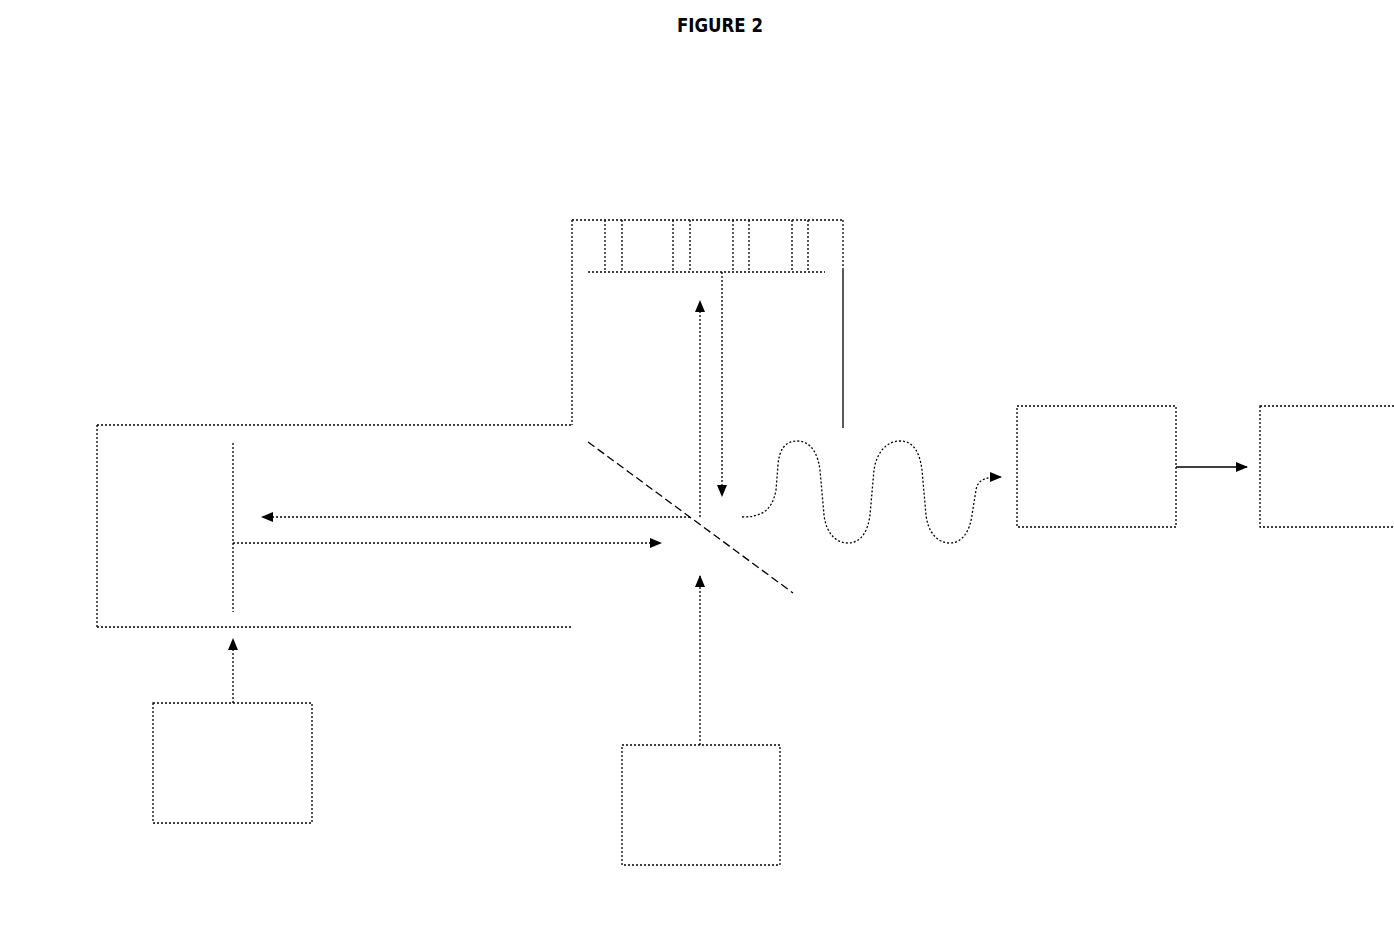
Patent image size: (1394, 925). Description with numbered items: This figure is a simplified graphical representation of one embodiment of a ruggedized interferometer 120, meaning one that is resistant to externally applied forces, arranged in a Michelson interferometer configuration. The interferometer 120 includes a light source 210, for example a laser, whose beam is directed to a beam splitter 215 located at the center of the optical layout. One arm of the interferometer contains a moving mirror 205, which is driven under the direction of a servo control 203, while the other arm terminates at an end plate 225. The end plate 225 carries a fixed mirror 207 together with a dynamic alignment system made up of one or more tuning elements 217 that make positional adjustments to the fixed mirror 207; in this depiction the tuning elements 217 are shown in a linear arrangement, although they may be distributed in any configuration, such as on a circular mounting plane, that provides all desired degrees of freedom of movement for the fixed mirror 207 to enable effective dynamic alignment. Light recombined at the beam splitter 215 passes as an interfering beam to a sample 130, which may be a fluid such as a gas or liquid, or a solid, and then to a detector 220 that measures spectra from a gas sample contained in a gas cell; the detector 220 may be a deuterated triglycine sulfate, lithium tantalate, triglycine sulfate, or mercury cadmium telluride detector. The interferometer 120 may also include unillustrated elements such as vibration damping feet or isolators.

The interferometer 120 is at (409, 187).
The moving mirror 205 is at (233, 446).
The fixed mirror 207 is at (650, 272).
The tuning elements 217 is at (685, 220).
The end plate 225 is at (843, 287).
The beam splitter 215 is at (775, 583).
The servo control 203 is at (232, 731).
The light source 210 is at (701, 720).
The sample 130 is at (1132, 466).
The detector 220 is at (1327, 466).